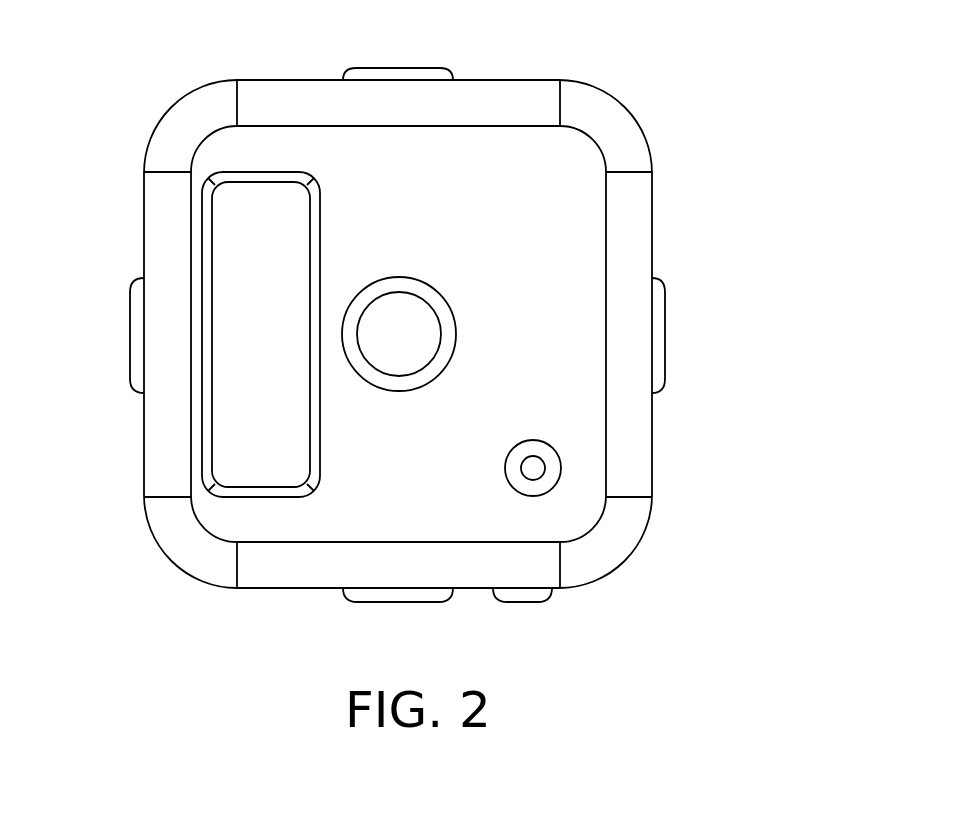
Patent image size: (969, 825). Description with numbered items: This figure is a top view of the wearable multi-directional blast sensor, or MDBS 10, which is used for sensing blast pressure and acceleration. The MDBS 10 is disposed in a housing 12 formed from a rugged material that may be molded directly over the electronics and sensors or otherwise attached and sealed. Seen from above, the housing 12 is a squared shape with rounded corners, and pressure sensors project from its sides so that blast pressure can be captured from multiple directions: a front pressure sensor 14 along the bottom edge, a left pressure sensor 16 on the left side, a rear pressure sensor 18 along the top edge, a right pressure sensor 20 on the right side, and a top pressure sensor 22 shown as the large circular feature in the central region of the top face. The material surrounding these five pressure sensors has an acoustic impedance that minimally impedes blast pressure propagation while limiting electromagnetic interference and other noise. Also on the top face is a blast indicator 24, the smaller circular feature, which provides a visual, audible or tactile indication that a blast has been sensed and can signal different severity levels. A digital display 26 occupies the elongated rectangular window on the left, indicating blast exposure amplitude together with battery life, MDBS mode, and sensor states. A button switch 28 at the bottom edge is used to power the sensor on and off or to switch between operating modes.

The MDBS 10 is at (719, 77).
The housing 12 is at (652, 455).
The front pressure sensor 14 is at (357, 604).
The left pressure sensor 16 is at (128, 337).
The rear pressure sensor 18 is at (440, 68).
The right pressure sensor 20 is at (665, 333).
The top pressure sensor 22 is at (436, 290).
The blast indicator 24 is at (505, 470).
The digital display 26 is at (261, 334).
The button switch 28 is at (520, 603).